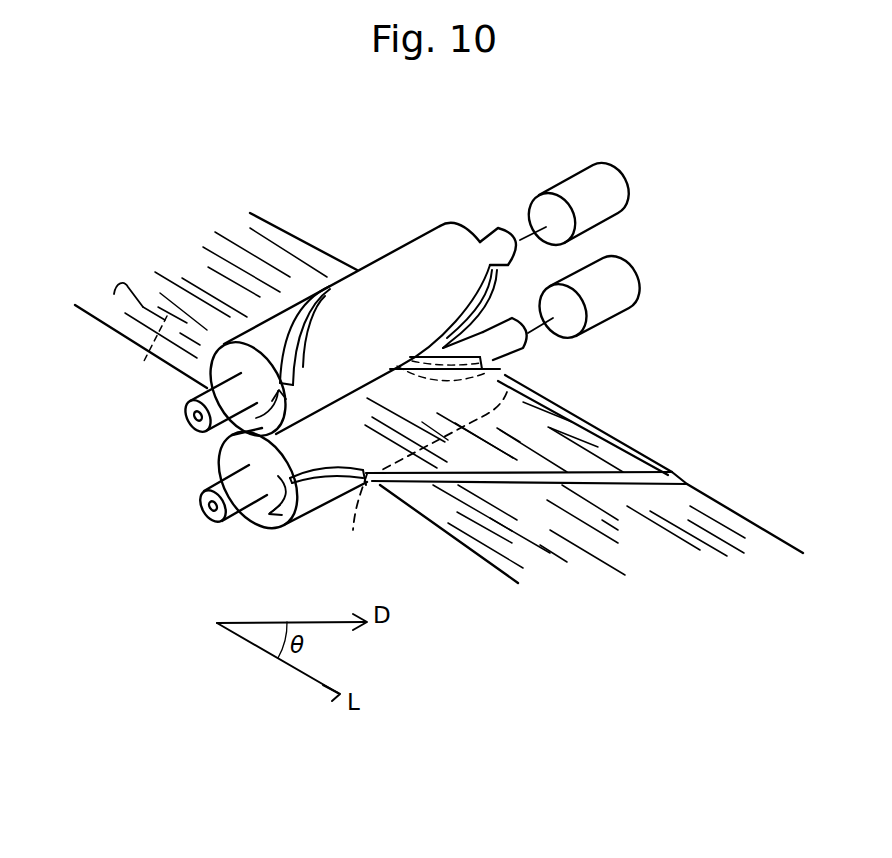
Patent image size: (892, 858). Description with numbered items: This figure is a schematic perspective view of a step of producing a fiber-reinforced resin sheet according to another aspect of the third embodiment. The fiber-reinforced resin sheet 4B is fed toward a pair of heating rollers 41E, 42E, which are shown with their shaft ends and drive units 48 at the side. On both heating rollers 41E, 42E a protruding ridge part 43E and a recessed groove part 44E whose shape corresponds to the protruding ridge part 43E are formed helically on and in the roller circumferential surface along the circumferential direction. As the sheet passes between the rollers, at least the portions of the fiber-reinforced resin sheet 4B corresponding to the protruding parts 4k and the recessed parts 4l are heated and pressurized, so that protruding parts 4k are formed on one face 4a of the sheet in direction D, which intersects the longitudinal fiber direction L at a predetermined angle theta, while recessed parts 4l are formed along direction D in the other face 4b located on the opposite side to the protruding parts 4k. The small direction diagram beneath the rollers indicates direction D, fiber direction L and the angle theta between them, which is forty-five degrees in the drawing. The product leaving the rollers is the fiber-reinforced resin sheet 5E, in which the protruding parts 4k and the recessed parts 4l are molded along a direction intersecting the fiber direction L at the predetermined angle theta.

The fiber-reinforced resin sheet 4B is at (267, 247).
The other face 4b is at (114, 294).
The one face 4a is at (142, 354).
The heating roller 41E is at (195, 430).
The heating roller 42E is at (213, 523).
The protruding ridge part 43E is at (317, 290).
The recessed groove part 44E is at (337, 474).
The motor 48 is at (603, 177).
The protruding parts 4k is at (429, 474).
The recessed parts 4l is at (672, 472).
The fiber-reinforced resin sheet 5E is at (745, 537).